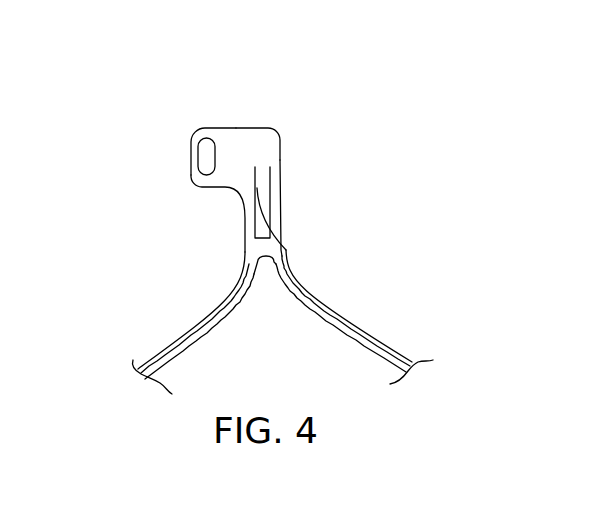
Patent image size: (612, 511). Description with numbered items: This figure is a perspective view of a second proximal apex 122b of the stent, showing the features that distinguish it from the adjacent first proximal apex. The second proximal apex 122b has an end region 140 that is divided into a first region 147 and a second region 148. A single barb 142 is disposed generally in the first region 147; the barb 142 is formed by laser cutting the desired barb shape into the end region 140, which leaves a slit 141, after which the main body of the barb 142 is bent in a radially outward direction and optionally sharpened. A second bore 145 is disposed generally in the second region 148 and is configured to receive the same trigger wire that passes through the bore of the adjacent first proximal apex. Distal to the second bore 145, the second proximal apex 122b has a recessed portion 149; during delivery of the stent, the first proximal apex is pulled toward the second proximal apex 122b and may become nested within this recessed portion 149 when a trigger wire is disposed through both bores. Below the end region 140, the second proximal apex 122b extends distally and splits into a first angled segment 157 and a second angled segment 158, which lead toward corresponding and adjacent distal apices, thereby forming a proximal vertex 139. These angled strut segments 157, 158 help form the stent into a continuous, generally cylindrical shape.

The second proximal apex 122b is at (196, 123).
The second region 148 is at (206, 128).
The first region 147 is at (264, 127).
The end region 140 is at (273, 160).
The barb 142 is at (270, 210).
The second bore 145 is at (205, 160).
The recessed portion 149 is at (221, 191).
The slit 141 is at (258, 231).
The proximal vertex 139 is at (262, 272).
The first angled segment 157 is at (176, 351).
The second angled segment 158 is at (367, 343).